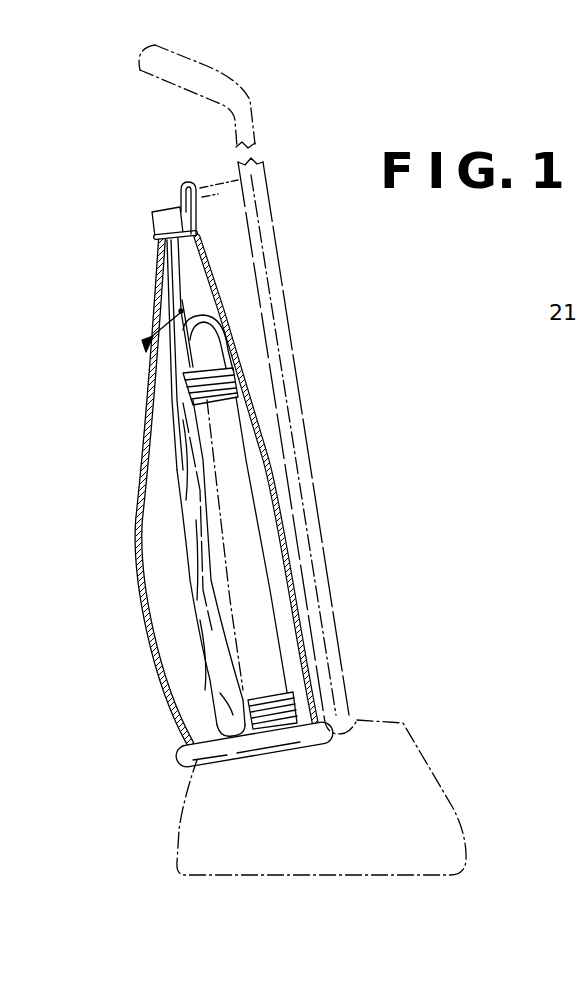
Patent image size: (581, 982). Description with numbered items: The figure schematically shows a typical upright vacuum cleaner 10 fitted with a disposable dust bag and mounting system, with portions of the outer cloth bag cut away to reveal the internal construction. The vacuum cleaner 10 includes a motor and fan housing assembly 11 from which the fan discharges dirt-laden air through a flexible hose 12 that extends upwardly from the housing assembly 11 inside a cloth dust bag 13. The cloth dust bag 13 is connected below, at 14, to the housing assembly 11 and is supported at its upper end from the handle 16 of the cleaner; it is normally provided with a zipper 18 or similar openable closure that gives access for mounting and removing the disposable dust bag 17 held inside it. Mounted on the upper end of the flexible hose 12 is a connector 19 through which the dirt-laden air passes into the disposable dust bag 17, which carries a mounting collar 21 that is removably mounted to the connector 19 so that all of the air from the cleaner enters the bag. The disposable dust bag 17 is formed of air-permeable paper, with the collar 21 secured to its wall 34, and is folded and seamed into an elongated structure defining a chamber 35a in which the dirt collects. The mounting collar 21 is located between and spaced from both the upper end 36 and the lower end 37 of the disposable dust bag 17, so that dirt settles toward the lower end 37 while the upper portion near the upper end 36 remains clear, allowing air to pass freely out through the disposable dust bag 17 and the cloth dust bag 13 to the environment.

The upright vacuum cleaner 10 is at (376, 679).
The motor and fan housing assembly 11 is at (420, 756).
The flexible hose 12 is at (253, 494).
The cloth dust bag 13 is at (140, 589).
The lower connection of cloth dust bag 14 is at (183, 760).
The handle 16 is at (215, 72).
The disposable dust bag 17 is at (164, 437).
The zipper 18 is at (142, 341).
The connector 19 is at (210, 350).
The mounting collar 21 is at (181, 310).
The wall of the disposable dust bag 34 is at (168, 284).
The chamber 35a is at (187, 517).
The upper end of the dust bag 36 is at (158, 251).
The lower end of the dust bag 37 is at (212, 707).